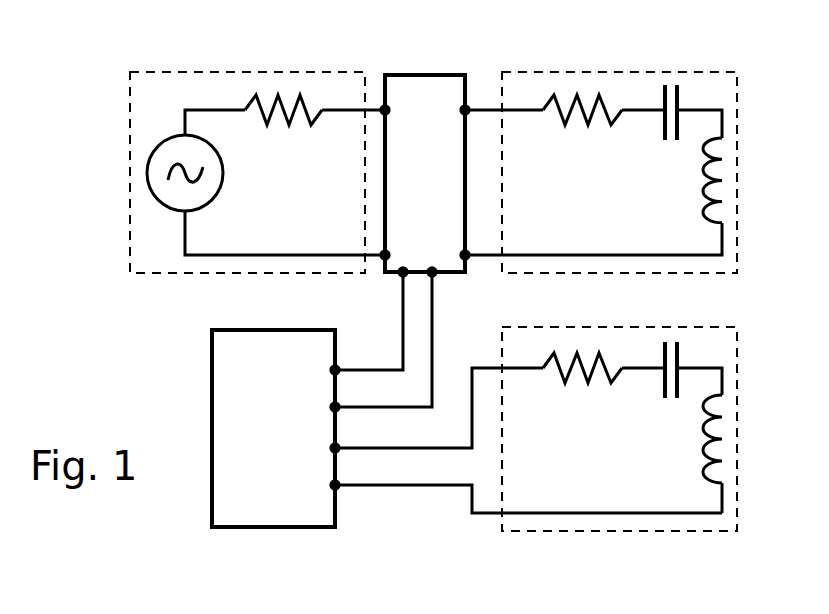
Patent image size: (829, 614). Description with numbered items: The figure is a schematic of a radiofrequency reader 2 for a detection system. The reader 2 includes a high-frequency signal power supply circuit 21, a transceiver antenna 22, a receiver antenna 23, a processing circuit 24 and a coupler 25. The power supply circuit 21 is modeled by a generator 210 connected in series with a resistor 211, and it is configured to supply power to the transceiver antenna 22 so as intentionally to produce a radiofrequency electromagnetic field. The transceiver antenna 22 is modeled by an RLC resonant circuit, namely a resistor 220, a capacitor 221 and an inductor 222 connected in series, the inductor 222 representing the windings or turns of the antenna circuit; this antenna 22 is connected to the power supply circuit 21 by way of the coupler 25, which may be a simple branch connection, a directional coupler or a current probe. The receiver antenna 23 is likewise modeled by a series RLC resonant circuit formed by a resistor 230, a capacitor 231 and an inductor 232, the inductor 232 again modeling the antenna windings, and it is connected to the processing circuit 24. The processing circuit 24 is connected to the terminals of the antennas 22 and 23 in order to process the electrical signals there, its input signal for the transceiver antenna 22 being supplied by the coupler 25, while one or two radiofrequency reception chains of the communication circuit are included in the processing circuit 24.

The radiofrequency reader 2 is at (120, 358).
The high-frequency signal power supply circuit 21 is at (238, 72).
The transceiver antenna 22 is at (600, 72).
The receiver antenna 23 is at (615, 532).
The processing circuit 24 is at (268, 527).
The coupler 25 is at (430, 73).
The generator 210 is at (220, 195).
The resistor 211 is at (287, 125).
The resistor 220 is at (580, 127).
The capacitor 221 is at (663, 142).
The inductor 222 is at (703, 187).
The resistor 230 is at (578, 383).
The capacitor 231 is at (663, 398).
The inductor 232 is at (703, 442).